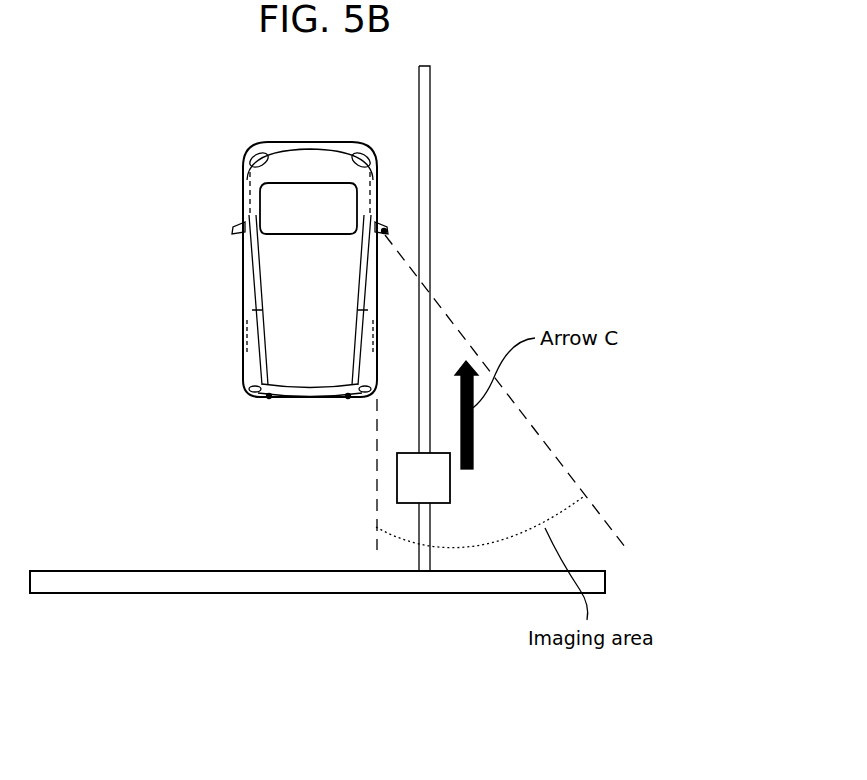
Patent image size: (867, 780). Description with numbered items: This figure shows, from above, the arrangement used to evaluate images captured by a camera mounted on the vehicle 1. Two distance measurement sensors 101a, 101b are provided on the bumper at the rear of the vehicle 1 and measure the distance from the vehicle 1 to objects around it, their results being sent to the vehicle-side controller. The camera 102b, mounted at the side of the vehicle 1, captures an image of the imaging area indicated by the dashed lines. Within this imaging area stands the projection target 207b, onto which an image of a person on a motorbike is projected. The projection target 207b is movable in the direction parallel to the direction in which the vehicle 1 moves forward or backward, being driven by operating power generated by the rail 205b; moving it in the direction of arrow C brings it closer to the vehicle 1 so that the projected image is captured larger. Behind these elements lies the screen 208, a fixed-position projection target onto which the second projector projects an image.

The vehicle 1 is at (300, 163).
The distance measurement sensor 101a is at (269, 398).
The distance measurement sensor 101b is at (348, 398).
The camera 102b is at (385, 230).
The rail 205b is at (430, 122).
The projection target 207b is at (450, 483).
The screen 208 is at (425, 594).